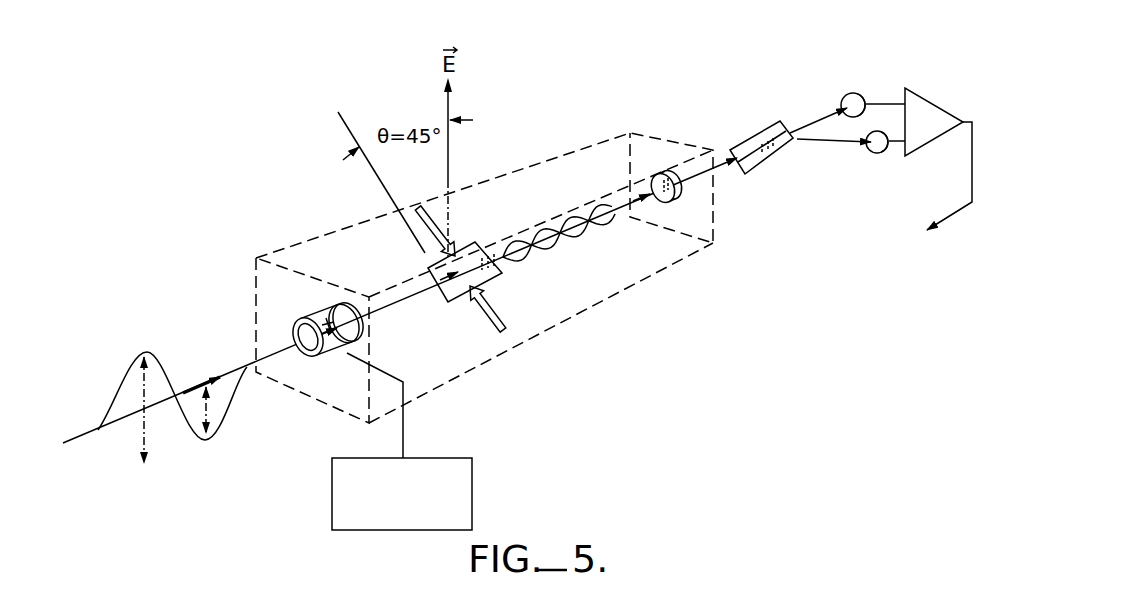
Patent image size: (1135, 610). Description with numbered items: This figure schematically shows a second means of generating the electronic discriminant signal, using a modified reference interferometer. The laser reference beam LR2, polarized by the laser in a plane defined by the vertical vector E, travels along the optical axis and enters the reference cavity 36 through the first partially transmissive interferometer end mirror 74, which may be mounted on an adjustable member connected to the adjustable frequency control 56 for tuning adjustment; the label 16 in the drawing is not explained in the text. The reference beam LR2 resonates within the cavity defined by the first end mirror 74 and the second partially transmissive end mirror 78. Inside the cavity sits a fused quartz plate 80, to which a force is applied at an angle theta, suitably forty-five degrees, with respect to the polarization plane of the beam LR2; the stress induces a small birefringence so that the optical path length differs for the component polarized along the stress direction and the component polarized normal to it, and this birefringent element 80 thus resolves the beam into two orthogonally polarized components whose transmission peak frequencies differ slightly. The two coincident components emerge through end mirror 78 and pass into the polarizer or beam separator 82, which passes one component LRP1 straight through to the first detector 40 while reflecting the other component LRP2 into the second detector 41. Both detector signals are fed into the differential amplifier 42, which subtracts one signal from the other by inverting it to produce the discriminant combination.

The light beam aperture 16 is at (312, 362).
The reference cavity 36 is at (278, 250).
The first detector 40 is at (880, 156).
The second detector 41 is at (857, 92).
The differential amplifier 42 is at (915, 94).
The adjustable frequency control 56 is at (331, 490).
The first partially transmissive interferometer end mirror 74 is at (341, 329).
The second partially transmissive end mirror 78 is at (672, 204).
The fused quartz plate 80 is at (468, 242).
The polarizer or beam separator 82 is at (758, 173).
The laser reference beam LR2 is at (112, 428).
The first beam component LRP1 is at (800, 147).
The second beam component LRP2 is at (807, 124).